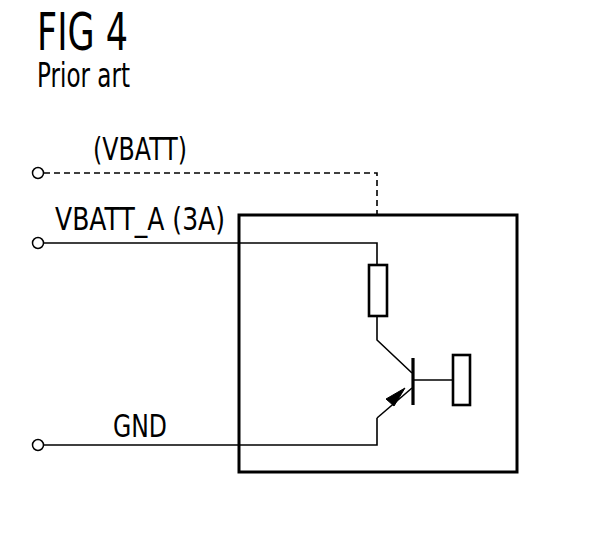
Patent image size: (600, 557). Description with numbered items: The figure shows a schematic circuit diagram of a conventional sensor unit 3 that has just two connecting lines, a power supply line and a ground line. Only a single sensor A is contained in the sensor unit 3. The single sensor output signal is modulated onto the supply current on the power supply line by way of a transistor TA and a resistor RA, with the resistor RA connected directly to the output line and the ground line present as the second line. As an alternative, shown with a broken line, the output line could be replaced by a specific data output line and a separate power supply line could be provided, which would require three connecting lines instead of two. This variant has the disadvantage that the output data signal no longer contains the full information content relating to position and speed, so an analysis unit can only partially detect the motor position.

The sensor unit 3 is at (377, 473).
The resistor RA is at (369, 290).
The transistor TA is at (412, 380).
The sensor A is at (462, 355).